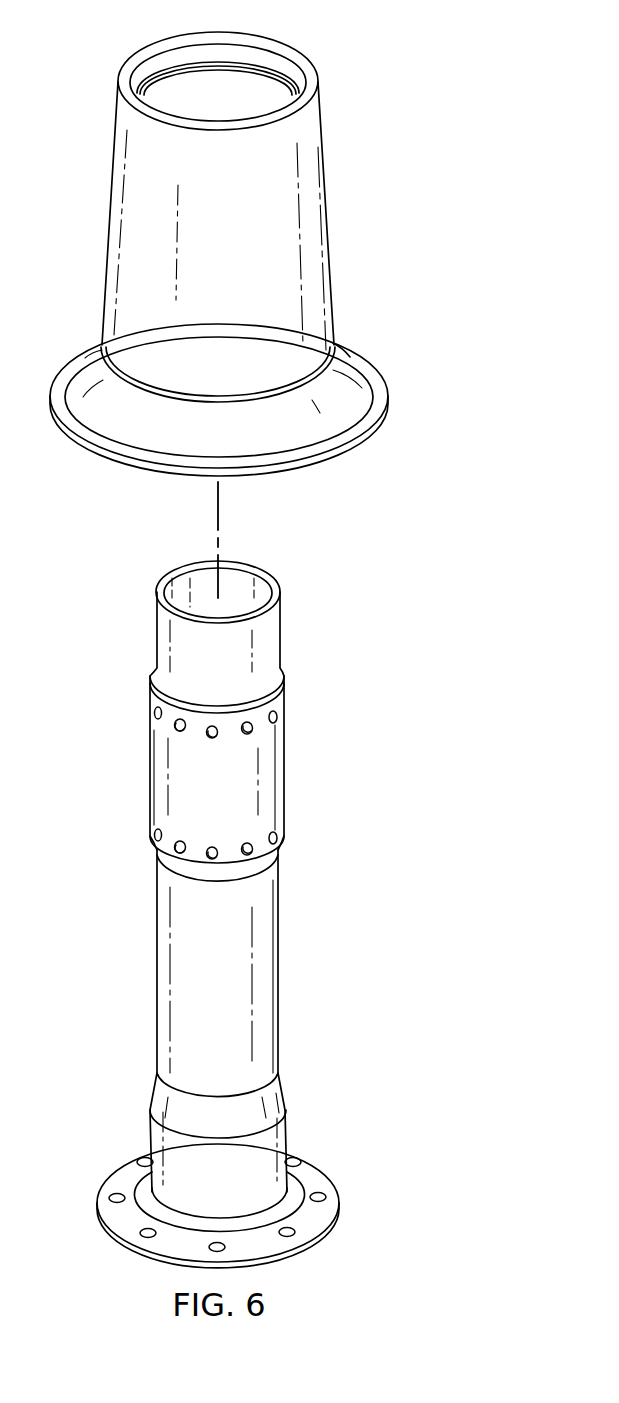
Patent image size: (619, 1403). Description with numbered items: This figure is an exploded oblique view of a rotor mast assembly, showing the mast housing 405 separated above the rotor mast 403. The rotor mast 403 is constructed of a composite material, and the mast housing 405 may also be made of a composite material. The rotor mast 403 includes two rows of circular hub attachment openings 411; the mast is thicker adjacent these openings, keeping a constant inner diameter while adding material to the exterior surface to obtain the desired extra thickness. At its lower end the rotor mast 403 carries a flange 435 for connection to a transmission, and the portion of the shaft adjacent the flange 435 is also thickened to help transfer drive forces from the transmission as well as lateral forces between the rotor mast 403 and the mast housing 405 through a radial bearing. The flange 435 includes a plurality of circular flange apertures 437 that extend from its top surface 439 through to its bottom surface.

The mast housing 405 is at (318, 206).
The rotor mast 403 is at (165, 960).
The hub attachment openings 411 is at (278, 720).
The top surface 439 is at (312, 1165).
The flange 435 is at (300, 1255).
The flange apertures 437 is at (112, 1197).